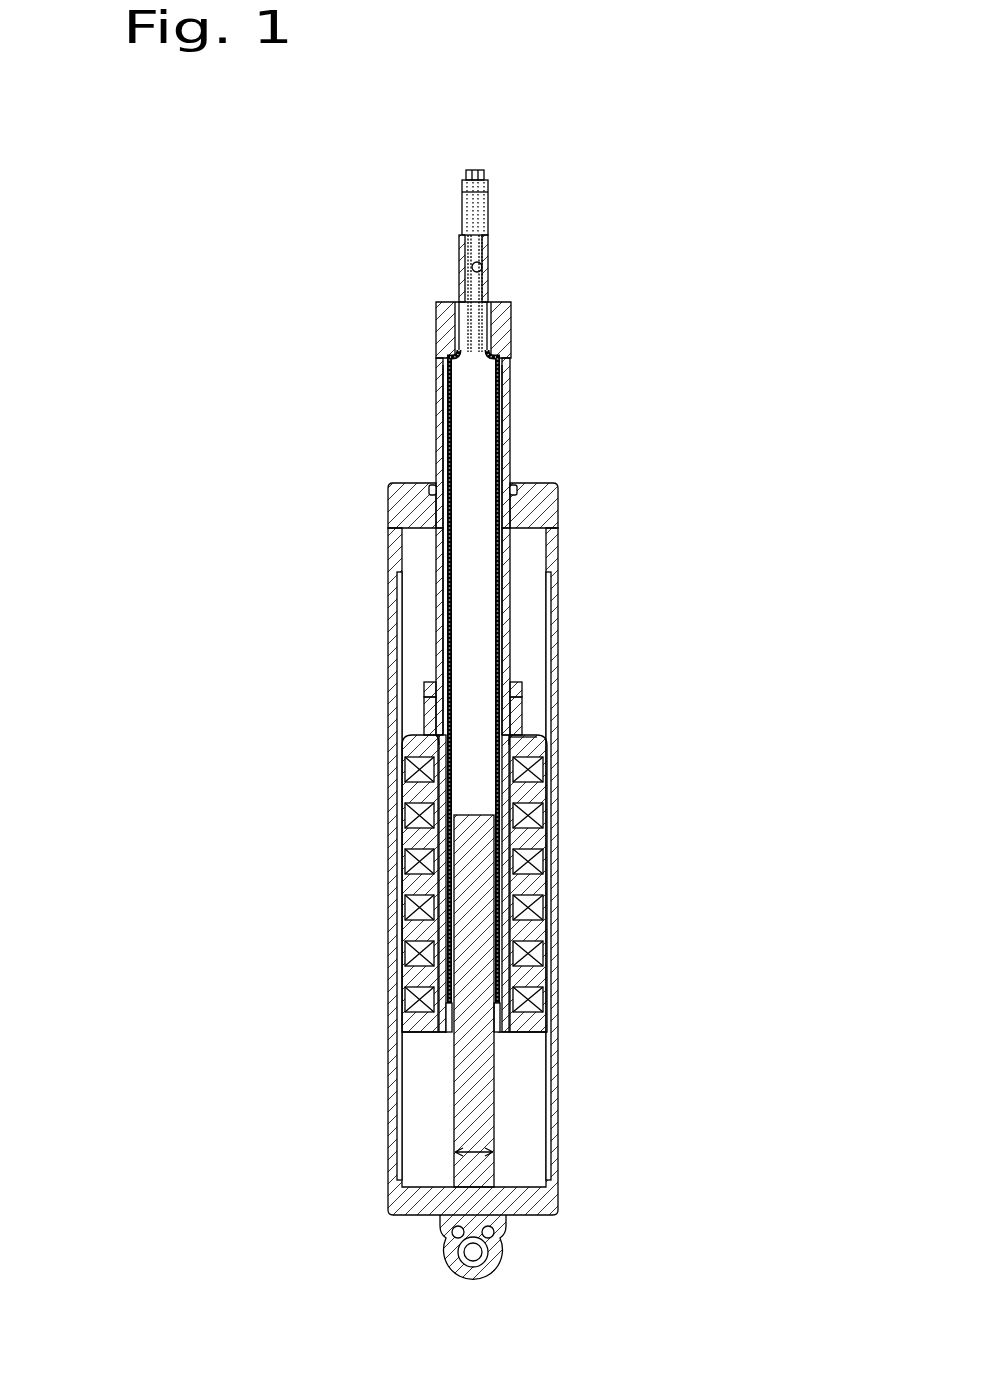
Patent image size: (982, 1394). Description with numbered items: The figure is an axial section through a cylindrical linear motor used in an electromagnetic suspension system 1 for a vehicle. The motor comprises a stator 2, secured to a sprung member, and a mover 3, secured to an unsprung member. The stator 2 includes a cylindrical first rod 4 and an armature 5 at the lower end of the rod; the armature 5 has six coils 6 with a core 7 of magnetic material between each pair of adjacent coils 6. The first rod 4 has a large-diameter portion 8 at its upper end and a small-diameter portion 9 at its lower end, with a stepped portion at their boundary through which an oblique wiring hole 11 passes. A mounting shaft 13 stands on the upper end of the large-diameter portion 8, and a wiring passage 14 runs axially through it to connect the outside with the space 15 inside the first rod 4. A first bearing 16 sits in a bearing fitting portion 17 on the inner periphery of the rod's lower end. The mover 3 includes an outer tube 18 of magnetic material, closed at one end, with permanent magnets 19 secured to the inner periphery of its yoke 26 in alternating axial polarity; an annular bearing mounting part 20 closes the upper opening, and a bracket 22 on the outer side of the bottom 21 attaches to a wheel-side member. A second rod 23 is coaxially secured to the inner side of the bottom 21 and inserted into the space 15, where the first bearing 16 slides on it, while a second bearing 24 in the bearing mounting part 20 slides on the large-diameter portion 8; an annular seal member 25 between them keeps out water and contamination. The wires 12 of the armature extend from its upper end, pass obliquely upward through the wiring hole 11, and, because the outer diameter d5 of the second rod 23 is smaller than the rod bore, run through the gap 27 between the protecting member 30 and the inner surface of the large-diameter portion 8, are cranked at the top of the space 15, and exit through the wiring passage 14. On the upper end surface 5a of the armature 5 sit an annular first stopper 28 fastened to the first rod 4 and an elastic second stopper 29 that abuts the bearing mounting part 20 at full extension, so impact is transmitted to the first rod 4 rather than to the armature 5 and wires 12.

The electromagnetic suspension system 1 is at (362, 184).
The stator 2 is at (401, 334).
The mover 3 is at (364, 1103).
The first rod 4 is at (527, 376).
The armature 5 is at (563, 837).
The upper end surface of the armature 5a is at (548, 736).
The coils 6 is at (541, 860).
The core 7 is at (546, 932).
The large-diameter portion 8 is at (506, 645).
The small-diameter portion 9 is at (546, 979).
The wiring hole 11 is at (437, 728).
The armature wiring 12 is at (482, 173).
The mounting shaft 13 is at (488, 243).
The wiring passage 14 is at (483, 267).
The space 15 is at (481, 432).
The first bearing 16 is at (493, 1032).
The bearing fitting portion 17 is at (458, 1012).
The outer tube 18 is at (548, 548).
The permanent magnets 19 is at (549, 595).
The bearing mounting part 20 is at (516, 500).
The bottom 21 is at (530, 1208).
The bracket 22 is at (452, 1246).
The second rod 23 is at (482, 1098).
The second bearing 24 is at (412, 518).
The seal member 25 is at (436, 490).
The yoke 26 is at (412, 862).
The gap 27 is at (445, 652).
The first stopper 28 is at (521, 715).
The second stopper 29 is at (521, 689).
The protecting member 30 is at (455, 570).
The outer diameter of the second rod d5 is at (454, 1158).